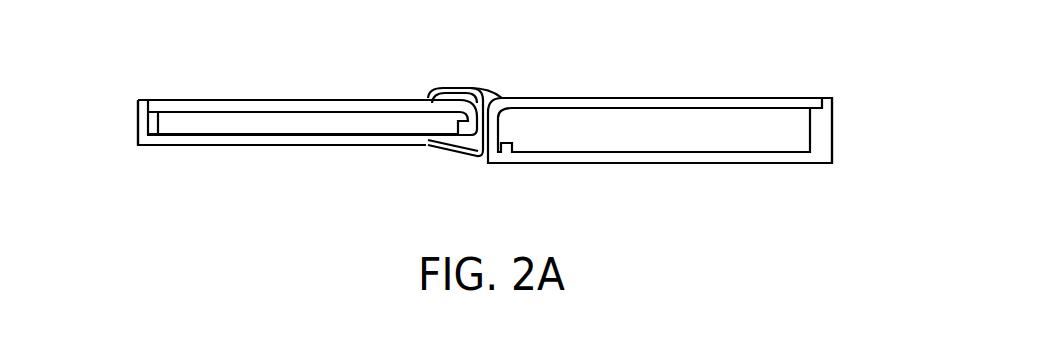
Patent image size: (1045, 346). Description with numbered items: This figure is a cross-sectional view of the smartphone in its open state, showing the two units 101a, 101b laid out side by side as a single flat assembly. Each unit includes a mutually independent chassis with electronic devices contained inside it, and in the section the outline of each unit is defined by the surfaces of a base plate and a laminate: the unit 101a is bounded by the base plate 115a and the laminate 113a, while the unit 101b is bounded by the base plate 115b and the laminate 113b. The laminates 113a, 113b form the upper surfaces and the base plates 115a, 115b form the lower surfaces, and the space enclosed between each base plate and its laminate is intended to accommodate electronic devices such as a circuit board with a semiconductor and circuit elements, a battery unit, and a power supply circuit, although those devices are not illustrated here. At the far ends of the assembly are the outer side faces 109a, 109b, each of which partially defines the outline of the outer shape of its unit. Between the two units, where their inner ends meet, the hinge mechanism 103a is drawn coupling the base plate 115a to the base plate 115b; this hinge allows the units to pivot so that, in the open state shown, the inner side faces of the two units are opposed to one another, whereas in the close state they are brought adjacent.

The unit 101a is at (712, 78).
The unit 101b is at (352, 83).
The hinge mechanism 103a is at (482, 97).
The outer side face 109a is at (833, 127).
The outer side face 109b is at (138, 120).
The laminate 113a is at (623, 98).
The laminate 113b is at (270, 98).
The base plate 115a is at (633, 157).
The base plate 115b is at (267, 138).